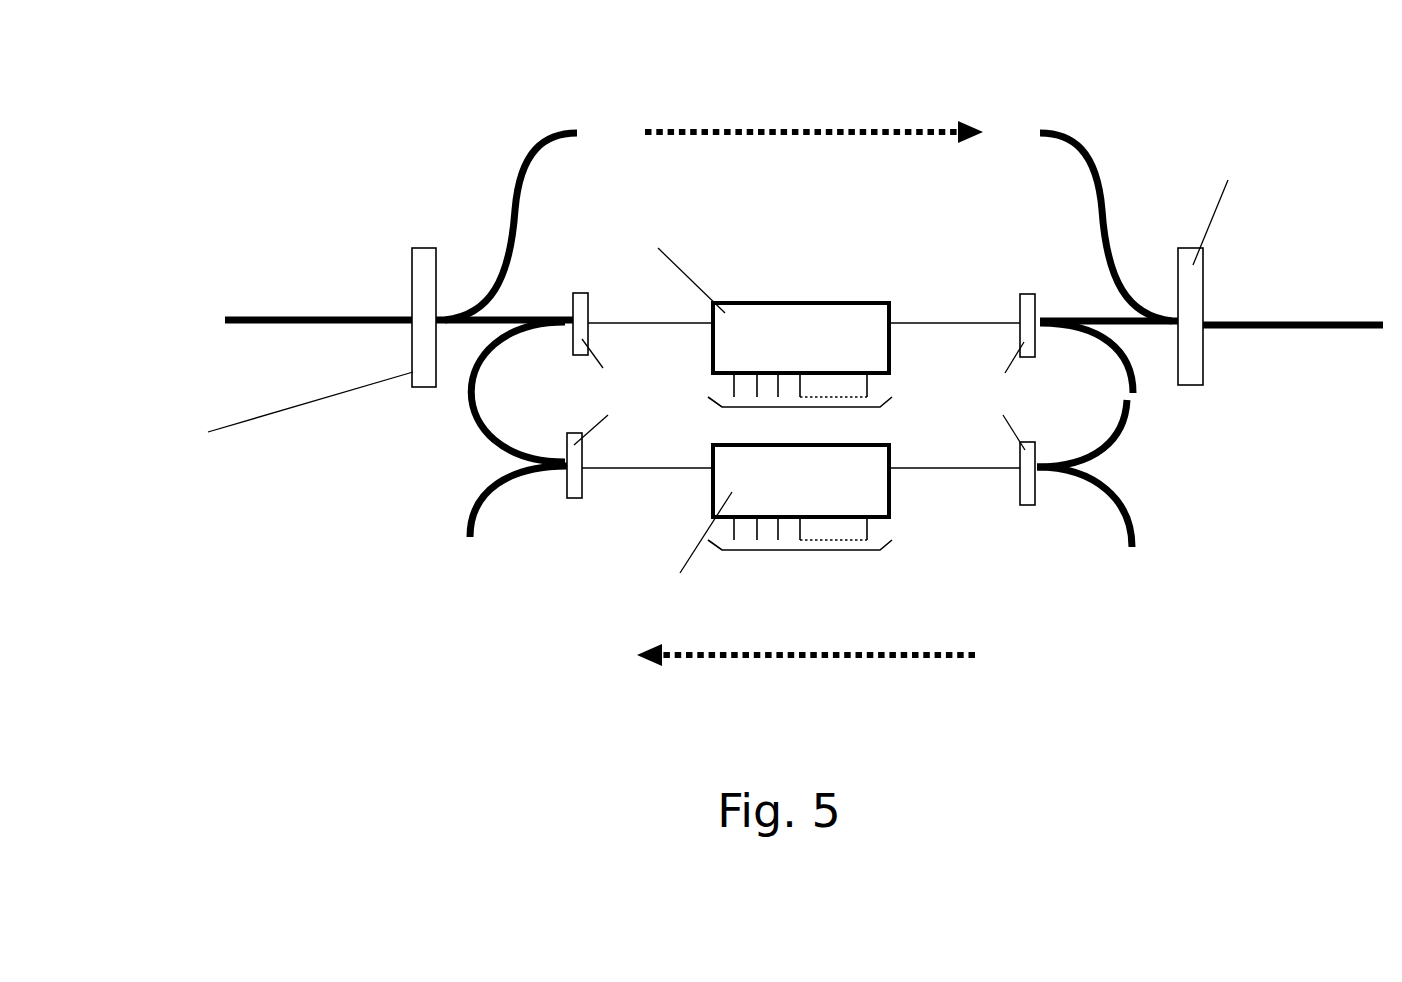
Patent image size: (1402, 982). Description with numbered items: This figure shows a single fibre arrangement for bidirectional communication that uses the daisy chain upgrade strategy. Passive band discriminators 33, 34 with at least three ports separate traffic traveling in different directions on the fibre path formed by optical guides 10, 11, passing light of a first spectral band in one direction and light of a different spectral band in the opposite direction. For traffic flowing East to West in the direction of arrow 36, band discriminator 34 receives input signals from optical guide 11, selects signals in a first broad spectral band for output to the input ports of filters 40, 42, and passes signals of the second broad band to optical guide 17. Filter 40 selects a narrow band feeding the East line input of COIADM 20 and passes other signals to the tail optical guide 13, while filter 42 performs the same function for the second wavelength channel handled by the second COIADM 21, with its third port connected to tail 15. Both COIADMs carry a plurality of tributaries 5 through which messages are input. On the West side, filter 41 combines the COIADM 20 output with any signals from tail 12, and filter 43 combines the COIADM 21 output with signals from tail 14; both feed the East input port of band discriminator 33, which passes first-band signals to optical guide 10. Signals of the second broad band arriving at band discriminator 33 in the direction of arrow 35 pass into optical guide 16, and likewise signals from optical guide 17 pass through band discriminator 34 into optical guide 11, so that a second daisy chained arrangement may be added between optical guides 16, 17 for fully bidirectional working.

The tributaries 5 is at (802, 407).
The optical guide 10 is at (240, 313).
The optical guide 11 is at (1353, 318).
The optical guide tail 12 is at (460, 391).
The optical guide 13 is at (1145, 390).
The optical guide tail 14 is at (460, 532).
The optical guide tail 15 is at (1143, 530).
The optical guide tail 16 is at (518, 153).
The optical guide 17 is at (1093, 155).
The COIADM 20 is at (751, 278).
The second COIADM 21 is at (770, 531).
The band discriminator 33 is at (425, 243).
The band discriminator 34 is at (1192, 243).
The arrow 35 is at (810, 125).
The arrow 36 is at (805, 660).
The filter 40 is at (1020, 288).
The filter 41 is at (578, 288).
The filter 42 is at (1032, 505).
The filter 43 is at (572, 507).